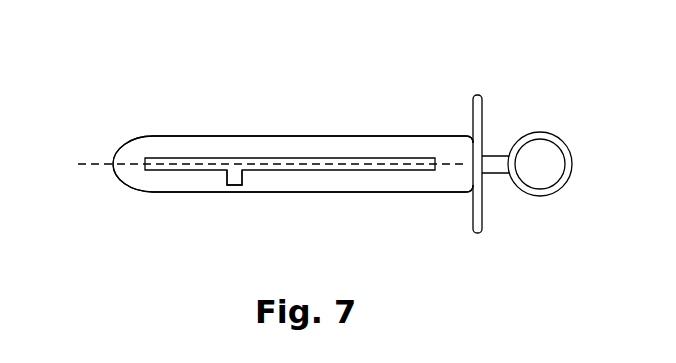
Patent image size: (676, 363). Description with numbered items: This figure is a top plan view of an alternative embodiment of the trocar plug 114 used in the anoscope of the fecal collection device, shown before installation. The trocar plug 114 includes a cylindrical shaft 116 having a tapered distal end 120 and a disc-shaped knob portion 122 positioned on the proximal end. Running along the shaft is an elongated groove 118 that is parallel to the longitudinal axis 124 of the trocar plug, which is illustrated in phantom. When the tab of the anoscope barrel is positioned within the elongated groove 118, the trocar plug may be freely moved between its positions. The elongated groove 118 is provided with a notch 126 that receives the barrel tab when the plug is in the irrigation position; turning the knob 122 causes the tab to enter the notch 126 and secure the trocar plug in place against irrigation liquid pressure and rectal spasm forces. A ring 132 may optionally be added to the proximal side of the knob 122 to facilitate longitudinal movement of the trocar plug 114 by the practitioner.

The trocar plug 114 is at (124, 34).
The cylindrical shaft 116 is at (358, 136).
The elongated groove 118 is at (332, 170).
The tapered distal end 120 is at (123, 148).
The disc-shaped knob portion 122 is at (477, 92).
The longitudinal axis 124 is at (90, 166).
The notch 126 is at (233, 185).
The ring 132 is at (537, 195).